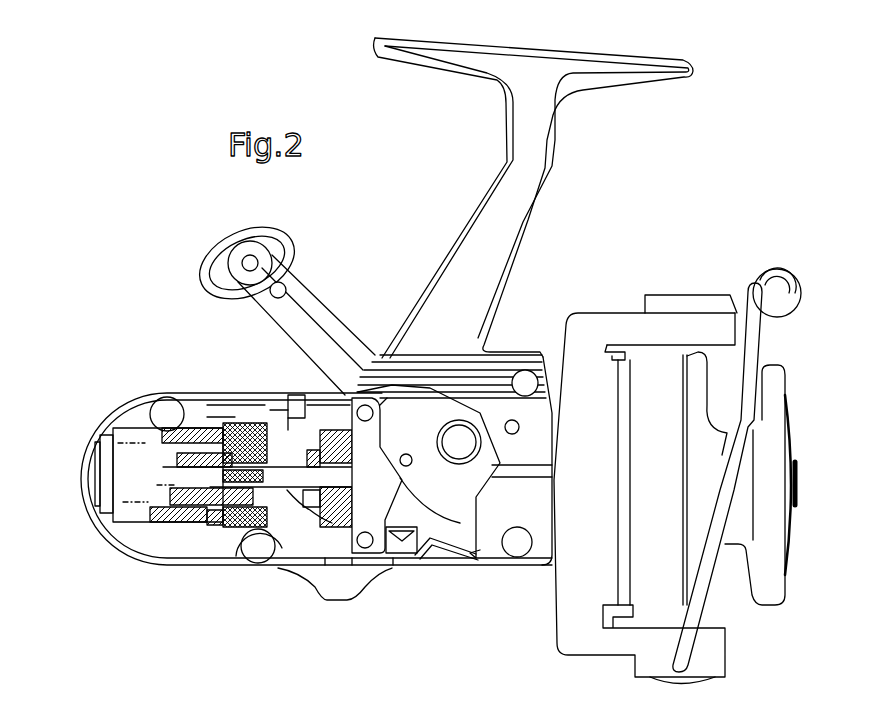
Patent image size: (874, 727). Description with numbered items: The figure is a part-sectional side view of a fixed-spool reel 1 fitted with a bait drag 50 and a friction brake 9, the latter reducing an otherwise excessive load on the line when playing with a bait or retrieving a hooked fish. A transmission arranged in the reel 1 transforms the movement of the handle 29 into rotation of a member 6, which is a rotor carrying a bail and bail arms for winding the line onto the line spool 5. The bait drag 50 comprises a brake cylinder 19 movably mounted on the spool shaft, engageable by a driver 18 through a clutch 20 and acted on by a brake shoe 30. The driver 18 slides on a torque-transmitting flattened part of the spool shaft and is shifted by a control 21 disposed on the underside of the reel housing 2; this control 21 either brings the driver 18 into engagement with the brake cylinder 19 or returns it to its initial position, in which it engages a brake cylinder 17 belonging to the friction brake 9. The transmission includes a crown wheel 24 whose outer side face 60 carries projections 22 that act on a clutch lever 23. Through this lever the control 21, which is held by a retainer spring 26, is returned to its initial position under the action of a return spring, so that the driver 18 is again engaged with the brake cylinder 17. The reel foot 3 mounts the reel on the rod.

The fixed-spool reel 1 is at (682, 186).
The reel housing 2 is at (500, 574).
The mounting foot / leg 3 is at (580, 42).
The line spool 5 is at (792, 592).
The member 6 is at (750, 279).
The friction brake 9 is at (170, 532).
The brake cylinder 17 is at (212, 527).
The driver 18 is at (246, 530).
The brake cylinder 19 is at (334, 532).
The clutch 20 is at (293, 455).
The control 21 is at (362, 590).
The projections 22 is at (414, 466).
The clutch lever 23 is at (390, 504).
The crown wheel 24 is at (440, 530).
The retainer spring 26 is at (464, 545).
The handle 29 is at (318, 292).
The brake shoe 30 is at (356, 431).
The bait drag 50 is at (306, 460).
The outer side face 60 is at (496, 446).